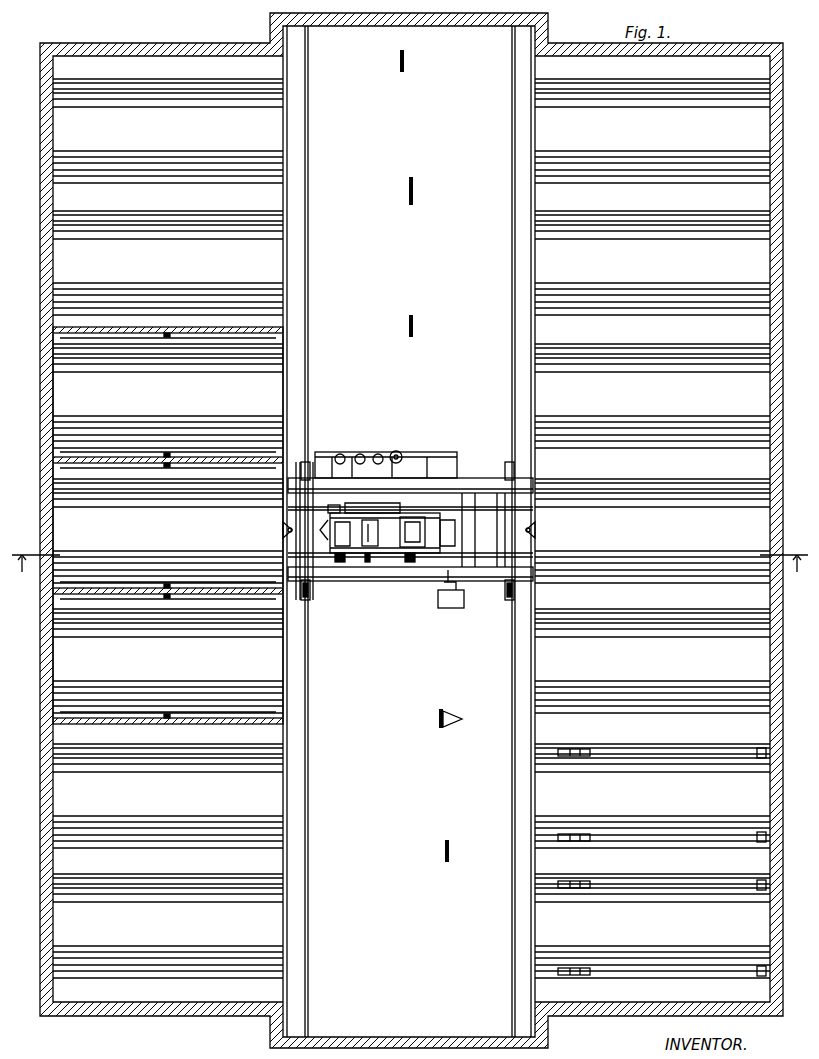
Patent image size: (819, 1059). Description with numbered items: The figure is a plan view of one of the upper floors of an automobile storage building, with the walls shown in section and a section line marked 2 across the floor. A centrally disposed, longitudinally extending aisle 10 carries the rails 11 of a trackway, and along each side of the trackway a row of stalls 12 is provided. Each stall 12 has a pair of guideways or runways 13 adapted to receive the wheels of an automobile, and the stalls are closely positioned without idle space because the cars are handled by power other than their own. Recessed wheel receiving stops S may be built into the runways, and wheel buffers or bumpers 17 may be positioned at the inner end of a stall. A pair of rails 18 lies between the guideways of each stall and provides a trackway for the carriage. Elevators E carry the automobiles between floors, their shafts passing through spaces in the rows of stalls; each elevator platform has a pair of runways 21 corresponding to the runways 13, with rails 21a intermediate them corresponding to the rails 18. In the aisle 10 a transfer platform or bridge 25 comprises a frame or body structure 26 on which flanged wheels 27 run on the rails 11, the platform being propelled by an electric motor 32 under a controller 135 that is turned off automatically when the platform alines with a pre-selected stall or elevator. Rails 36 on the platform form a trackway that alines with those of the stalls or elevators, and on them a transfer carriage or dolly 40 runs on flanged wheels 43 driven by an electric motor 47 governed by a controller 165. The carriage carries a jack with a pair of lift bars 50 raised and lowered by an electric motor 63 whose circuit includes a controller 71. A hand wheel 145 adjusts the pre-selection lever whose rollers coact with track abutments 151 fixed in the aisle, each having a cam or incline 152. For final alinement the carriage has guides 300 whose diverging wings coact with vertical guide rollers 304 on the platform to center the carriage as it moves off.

The section line 2 is at (410, 554).
The aisle 10 is at (409, 531).
The rails 11 is at (309, 358).
The stalls 12 is at (411, 509).
The guideways or runways 13 is at (276, 176).
The wheel buffers or bumpers 17 is at (760, 832).
The rails 18 is at (116, 114).
The runways 21 is at (94, 436).
The rails 21a is at (207, 685).
The transfer platform or bridge 25 is at (398, 478).
The frame or body structure 26 is at (462, 493).
The flanged wheels 27 is at (306, 462).
The electric motor 32 is at (446, 608).
The rails 36 is at (468, 512).
The transfer carriage or dolly 40 is at (385, 553).
The flanged wheels 43 is at (368, 561).
The electric motor 47 is at (408, 517).
The lift bars 50 is at (356, 515).
The electric motor 63 is at (379, 532).
The controller 71 is at (362, 452).
The controller 135 is at (378, 454).
The hand wheel 145 is at (398, 451).
The track abutments 151 is at (409, 190).
The cam or incline 152 is at (468, 720).
The controller 165 is at (340, 454).
The guides 300 is at (332, 515).
The vertical guide rollers 304 is at (283, 531).
The elevators E is at (168, 525).
The wheel receiving stops S is at (570, 834).